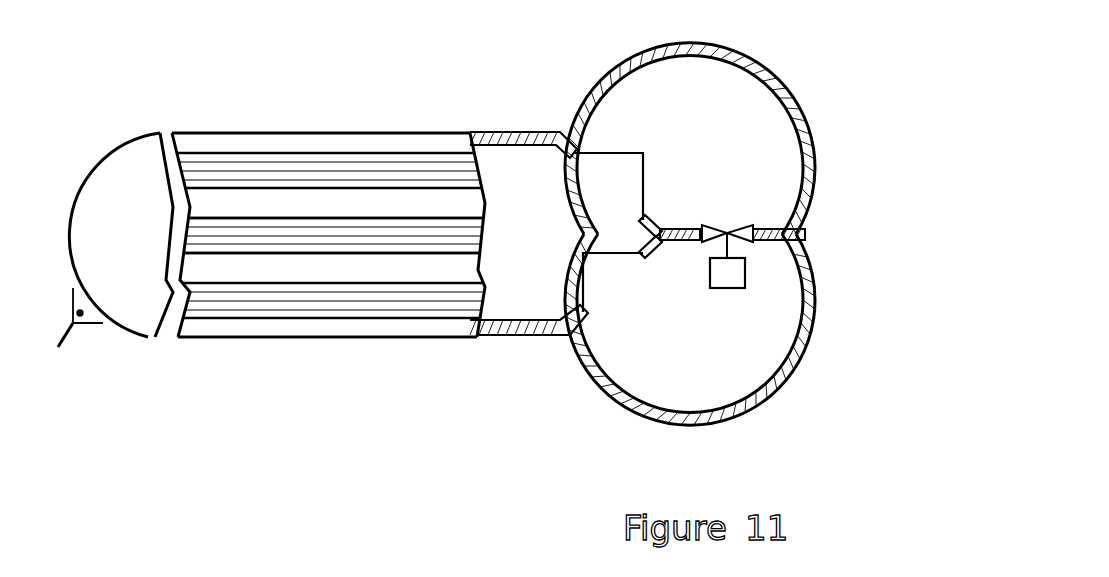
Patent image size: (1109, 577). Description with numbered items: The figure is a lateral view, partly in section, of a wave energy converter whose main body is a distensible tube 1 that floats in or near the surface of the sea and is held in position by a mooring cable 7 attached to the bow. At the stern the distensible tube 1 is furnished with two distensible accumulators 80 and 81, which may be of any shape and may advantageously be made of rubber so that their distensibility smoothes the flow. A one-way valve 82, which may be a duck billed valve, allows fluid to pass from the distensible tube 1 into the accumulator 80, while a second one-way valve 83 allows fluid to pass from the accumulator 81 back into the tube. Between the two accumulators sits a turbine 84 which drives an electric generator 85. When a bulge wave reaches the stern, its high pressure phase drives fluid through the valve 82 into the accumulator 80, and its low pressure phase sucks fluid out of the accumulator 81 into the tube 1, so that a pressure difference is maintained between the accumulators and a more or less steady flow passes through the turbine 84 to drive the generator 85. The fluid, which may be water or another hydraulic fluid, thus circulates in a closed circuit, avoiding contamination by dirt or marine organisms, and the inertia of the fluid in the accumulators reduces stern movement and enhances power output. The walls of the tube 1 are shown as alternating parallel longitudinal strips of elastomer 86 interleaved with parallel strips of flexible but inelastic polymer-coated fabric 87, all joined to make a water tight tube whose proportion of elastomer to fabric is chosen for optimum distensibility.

The distensible tube 1 is at (267, 130).
The mooring cable 7 is at (67, 332).
The distensible accumulator 80 is at (803, 120).
The distensible accumulator 81 is at (810, 337).
The one-way valve 82 is at (615, 152).
The one-way valve 83 is at (577, 282).
The turbine 84 is at (742, 215).
The electric generator 85 is at (745, 270).
The longitudinal strips of elastomer 86 is at (285, 300).
The strips of flexible but inelastic material 87 is at (403, 263).